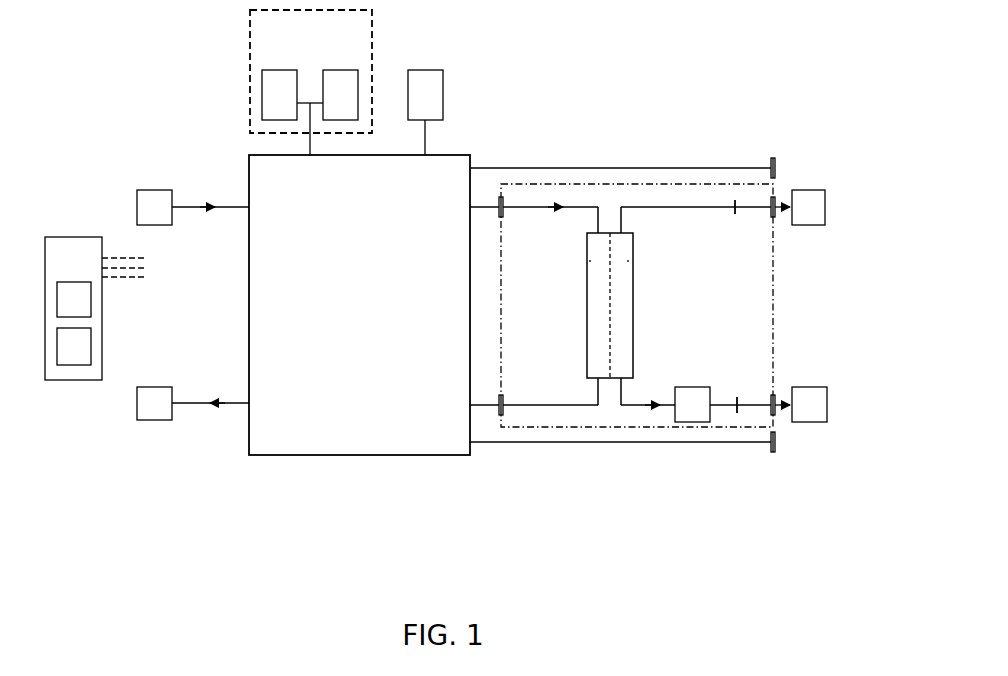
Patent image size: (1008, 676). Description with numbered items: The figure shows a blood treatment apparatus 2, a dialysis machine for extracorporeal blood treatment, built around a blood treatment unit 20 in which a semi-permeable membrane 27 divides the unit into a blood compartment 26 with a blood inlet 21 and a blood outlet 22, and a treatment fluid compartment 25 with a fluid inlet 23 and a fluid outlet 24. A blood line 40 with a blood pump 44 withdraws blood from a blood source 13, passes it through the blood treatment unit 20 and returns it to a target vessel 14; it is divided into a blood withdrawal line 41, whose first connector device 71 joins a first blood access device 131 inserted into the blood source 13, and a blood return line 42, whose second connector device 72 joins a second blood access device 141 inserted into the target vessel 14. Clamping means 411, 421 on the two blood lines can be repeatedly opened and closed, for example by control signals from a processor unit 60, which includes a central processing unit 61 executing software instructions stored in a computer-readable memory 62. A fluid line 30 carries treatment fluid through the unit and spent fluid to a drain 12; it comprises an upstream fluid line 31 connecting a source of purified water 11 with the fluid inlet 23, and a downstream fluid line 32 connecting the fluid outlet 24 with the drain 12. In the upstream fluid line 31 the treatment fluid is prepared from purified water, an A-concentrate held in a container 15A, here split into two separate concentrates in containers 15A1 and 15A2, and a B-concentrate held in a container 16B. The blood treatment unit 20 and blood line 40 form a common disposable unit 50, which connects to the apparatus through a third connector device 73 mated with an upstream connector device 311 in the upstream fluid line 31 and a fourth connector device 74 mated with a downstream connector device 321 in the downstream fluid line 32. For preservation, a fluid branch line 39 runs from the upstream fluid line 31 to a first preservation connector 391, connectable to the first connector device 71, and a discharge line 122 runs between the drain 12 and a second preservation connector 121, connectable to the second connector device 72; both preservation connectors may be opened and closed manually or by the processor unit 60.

The blood treatment apparatus 2 is at (677, 122).
The source of purified water 11 is at (154, 207).
The drain 12 is at (154, 403).
The blood source 13 is at (809, 404).
The target vessel 14 is at (808, 207).
The container 15A is at (311, 82).
The container 15A1 is at (279, 95).
The container 15A2 is at (340, 95).
The container 16B is at (425, 112).
The blood treatment unit 20 is at (647, 345).
The blood inlet 21 is at (622, 383).
The blood outlet 22 is at (623, 229).
The fluid inlet 23 is at (596, 229).
The fluid outlet 24 is at (597, 383).
The treatment fluid compartment 25 is at (600, 270).
The blood compartment 26 is at (623, 265).
The semi-permeable membrane 27 is at (608, 300).
The fluid line 30 is at (371, 467).
The upstream fluid line 31 is at (213, 207).
The downstream fluid line 32 is at (200, 404).
The fluid branch line 39 is at (654, 168).
The blood line 40 is at (719, 465).
The blood withdrawal line 41 is at (694, 378).
The blood return line 42 is at (689, 222).
The blood pump 44 is at (665, 404).
The disposable unit 50 is at (608, 428).
The processor unit 60 is at (95, 308).
The central processing unit 61 is at (74, 299).
The computer-readable memory 62 is at (74, 346).
The first connector device 71 is at (776, 394).
The second connector device 72 is at (776, 217).
The third connector device 73 is at (505, 207).
The fourth connector device 74 is at (507, 412).
The second preservation connector 121 is at (777, 447).
The discharge line 122 is at (692, 443).
The first blood access device 131 is at (788, 400).
The second blood access device 141 is at (777, 204).
The upstream connector device 311 is at (498, 205).
The downstream connector device 321 is at (499, 414).
The first preservation connector 391 is at (777, 162).
The clamping means 411 is at (737, 397).
The clamping means 421 is at (736, 215).